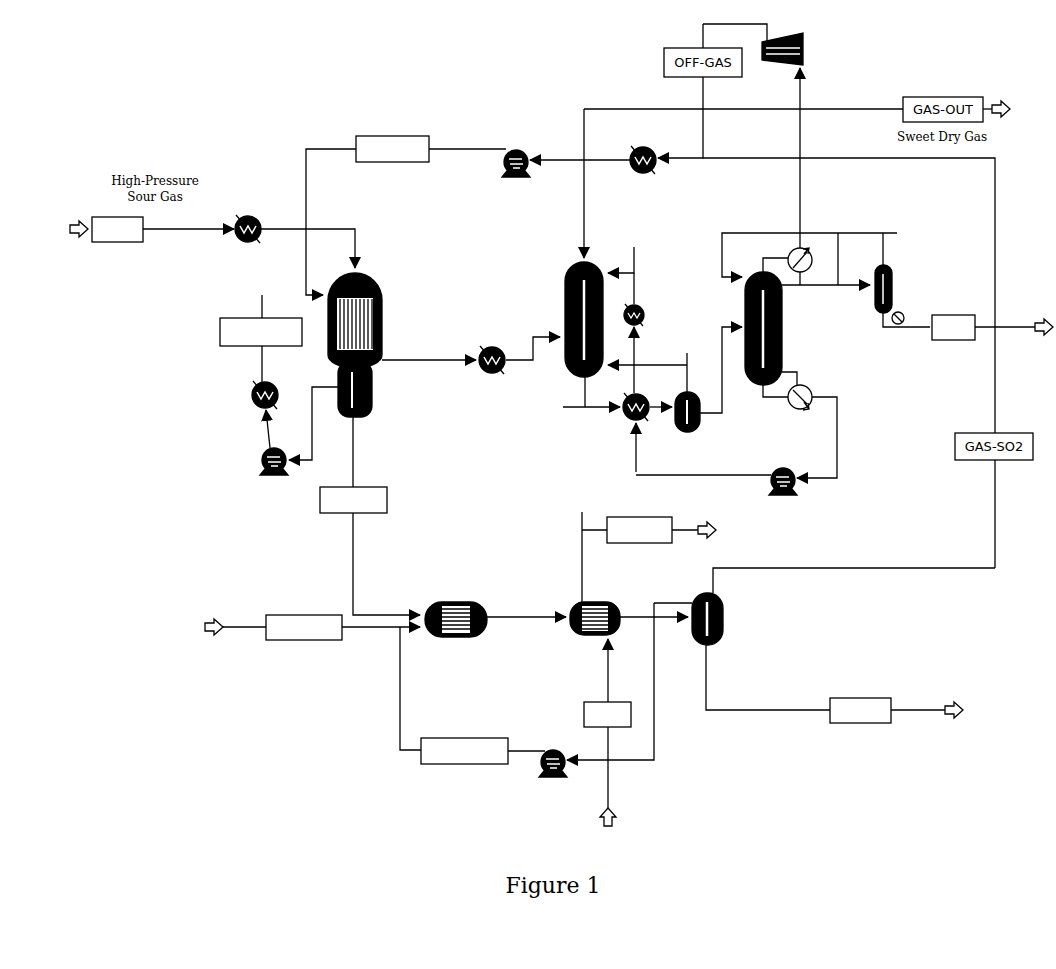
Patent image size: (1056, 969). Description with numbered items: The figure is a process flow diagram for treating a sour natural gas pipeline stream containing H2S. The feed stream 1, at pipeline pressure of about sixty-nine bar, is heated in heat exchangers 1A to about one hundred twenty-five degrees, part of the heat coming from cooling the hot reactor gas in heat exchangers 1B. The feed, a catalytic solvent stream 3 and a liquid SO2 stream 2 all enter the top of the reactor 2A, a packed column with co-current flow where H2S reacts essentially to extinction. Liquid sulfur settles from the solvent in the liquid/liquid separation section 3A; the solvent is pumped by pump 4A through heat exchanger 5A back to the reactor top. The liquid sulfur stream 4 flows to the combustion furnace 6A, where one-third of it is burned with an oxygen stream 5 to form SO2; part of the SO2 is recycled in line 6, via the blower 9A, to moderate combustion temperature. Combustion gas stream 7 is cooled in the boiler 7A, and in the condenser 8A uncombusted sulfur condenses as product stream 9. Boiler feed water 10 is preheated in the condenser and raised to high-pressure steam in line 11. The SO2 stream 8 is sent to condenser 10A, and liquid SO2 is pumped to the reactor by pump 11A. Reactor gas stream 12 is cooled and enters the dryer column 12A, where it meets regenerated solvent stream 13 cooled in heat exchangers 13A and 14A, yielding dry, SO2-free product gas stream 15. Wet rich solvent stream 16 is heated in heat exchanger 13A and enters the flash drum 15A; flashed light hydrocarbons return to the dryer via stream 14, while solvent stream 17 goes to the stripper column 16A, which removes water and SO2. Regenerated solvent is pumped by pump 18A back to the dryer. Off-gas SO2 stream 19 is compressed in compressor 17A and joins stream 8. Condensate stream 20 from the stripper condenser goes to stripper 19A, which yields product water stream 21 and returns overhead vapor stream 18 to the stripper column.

The feed stream 1 is at (177, 229).
The heat exchangers 1A is at (292, 248).
The heat exchangers 1B is at (515, 381).
The liquid SO2 stream 2 is at (394, 136).
The reactor 2A is at (402, 320).
The solvent stream 3 is at (220, 332).
The liquid/liquid separation section 3A is at (354, 411).
The liquid sulfur stream 4 is at (353, 565).
The pump 4A is at (272, 466).
The oxygen stream 5 is at (301, 640).
The heat exchanger 5A is at (230, 404).
The SO2 recycle line 6 is at (465, 764).
The combustion furnace 6A is at (456, 645).
The combustion gas stream 7 is at (522, 617).
The boiler 7A is at (616, 646).
The SO2 stream 8 is at (900, 568).
The condenser 8A is at (742, 651).
The product sulfur stream 9 is at (860, 698).
The blower 9A is at (589, 718).
The boiler feed water 10 is at (584, 716).
The condenser 10A is at (602, 181).
The high-pressure steam line 11 is at (640, 542).
The pump 11A is at (510, 187).
The gas stream 12 is at (442, 360).
The dryer column 12A is at (555, 334).
The regenerated solvent stream 13 is at (628, 261).
The heat exchanger 13A is at (626, 432).
The flash vapor stream 14 is at (653, 359).
The heat exchanger 14A is at (651, 337).
The product gas stream 15 is at (584, 109).
The flash drum 15A is at (703, 393).
The wet rich solvent stream 16 is at (573, 405).
The stripper column 16A is at (807, 363).
The solvent stream 17 is at (722, 327).
The compressor 17A is at (792, 136).
The overhead vapor stream 18 is at (827, 246).
The pump 18A is at (720, 505).
The off-gas SO2 stream 19 is at (800, 204).
The stripper 19A is at (912, 293).
The condensate stream 20 is at (838, 233).
The product water stream 21 is at (954, 340).